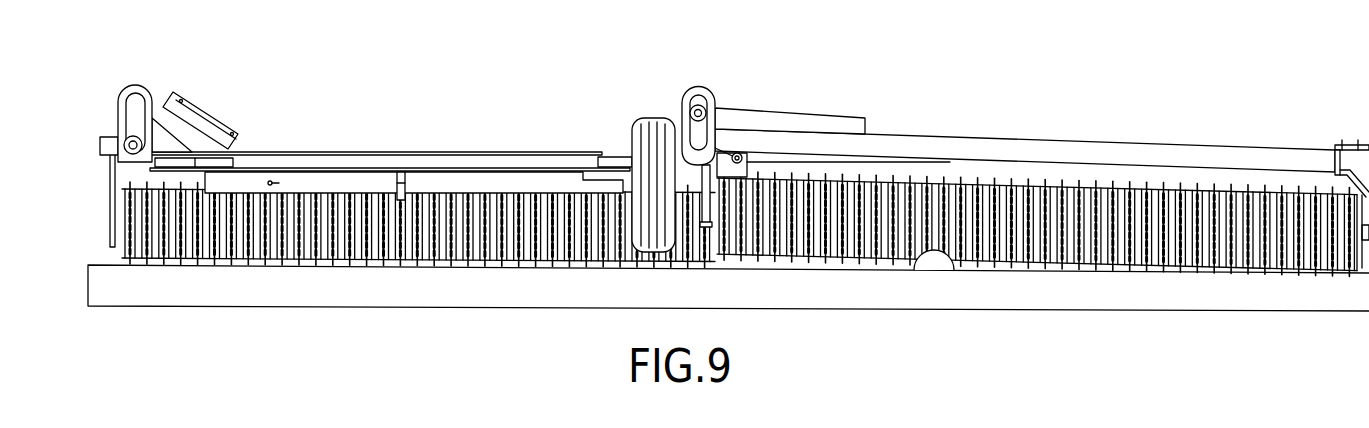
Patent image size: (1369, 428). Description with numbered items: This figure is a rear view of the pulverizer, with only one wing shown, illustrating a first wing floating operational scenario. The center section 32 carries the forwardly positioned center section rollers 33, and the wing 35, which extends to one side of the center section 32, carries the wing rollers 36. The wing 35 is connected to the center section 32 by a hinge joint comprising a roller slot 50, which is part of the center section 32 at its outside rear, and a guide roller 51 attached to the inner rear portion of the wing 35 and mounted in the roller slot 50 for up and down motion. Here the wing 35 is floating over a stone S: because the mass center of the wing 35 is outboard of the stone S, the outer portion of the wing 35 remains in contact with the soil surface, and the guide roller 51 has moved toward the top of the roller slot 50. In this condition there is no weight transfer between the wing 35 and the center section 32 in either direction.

The center section frame 32 is at (398, 102).
The center section rollers 33 is at (408, 263).
The wing 35 is at (1028, 120).
The wing rollers 36 is at (1118, 263).
The roller slot 50 is at (134, 108).
The guide roller 51 is at (706, 110).
The stone S is at (932, 262).